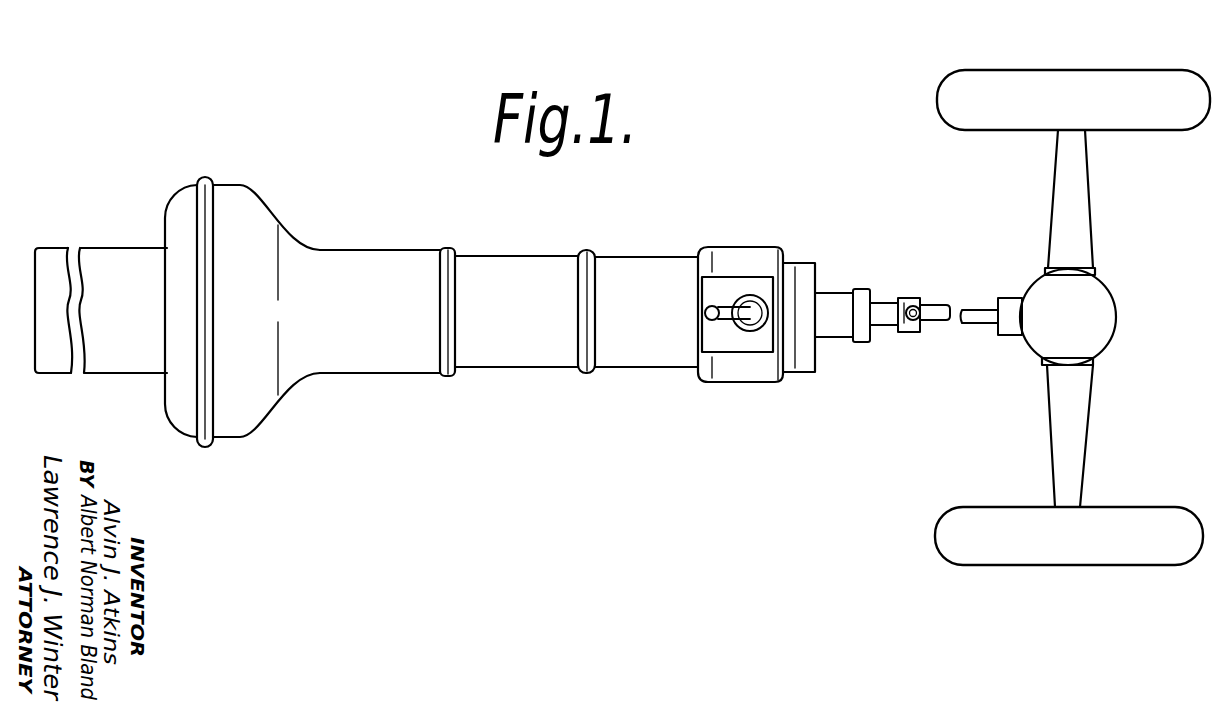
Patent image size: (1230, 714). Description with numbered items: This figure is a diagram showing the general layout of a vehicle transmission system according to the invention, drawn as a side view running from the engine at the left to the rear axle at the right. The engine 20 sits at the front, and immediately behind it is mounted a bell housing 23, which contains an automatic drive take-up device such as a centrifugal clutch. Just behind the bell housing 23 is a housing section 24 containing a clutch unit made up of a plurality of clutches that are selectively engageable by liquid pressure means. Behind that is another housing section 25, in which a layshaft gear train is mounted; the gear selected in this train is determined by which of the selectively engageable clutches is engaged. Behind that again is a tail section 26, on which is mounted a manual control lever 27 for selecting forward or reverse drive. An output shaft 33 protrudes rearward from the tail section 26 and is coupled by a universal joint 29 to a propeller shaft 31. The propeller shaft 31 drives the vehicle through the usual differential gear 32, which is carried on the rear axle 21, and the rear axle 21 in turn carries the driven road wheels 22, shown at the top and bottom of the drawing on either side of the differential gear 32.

The engine 20 is at (95, 358).
The rear axle 21 is at (1070, 203).
The driven road wheels 22 is at (1110, 80).
The bell housing 23 is at (238, 417).
The housing section 24 is at (412, 357).
The housing section 25 is at (543, 348).
The tail section 26 is at (678, 353).
The manual control lever 27 is at (747, 317).
The universal joint 29 is at (910, 332).
The propeller shaft 31 is at (975, 322).
The differential gear 32 is at (1097, 338).
The output shaft 33 is at (885, 318).